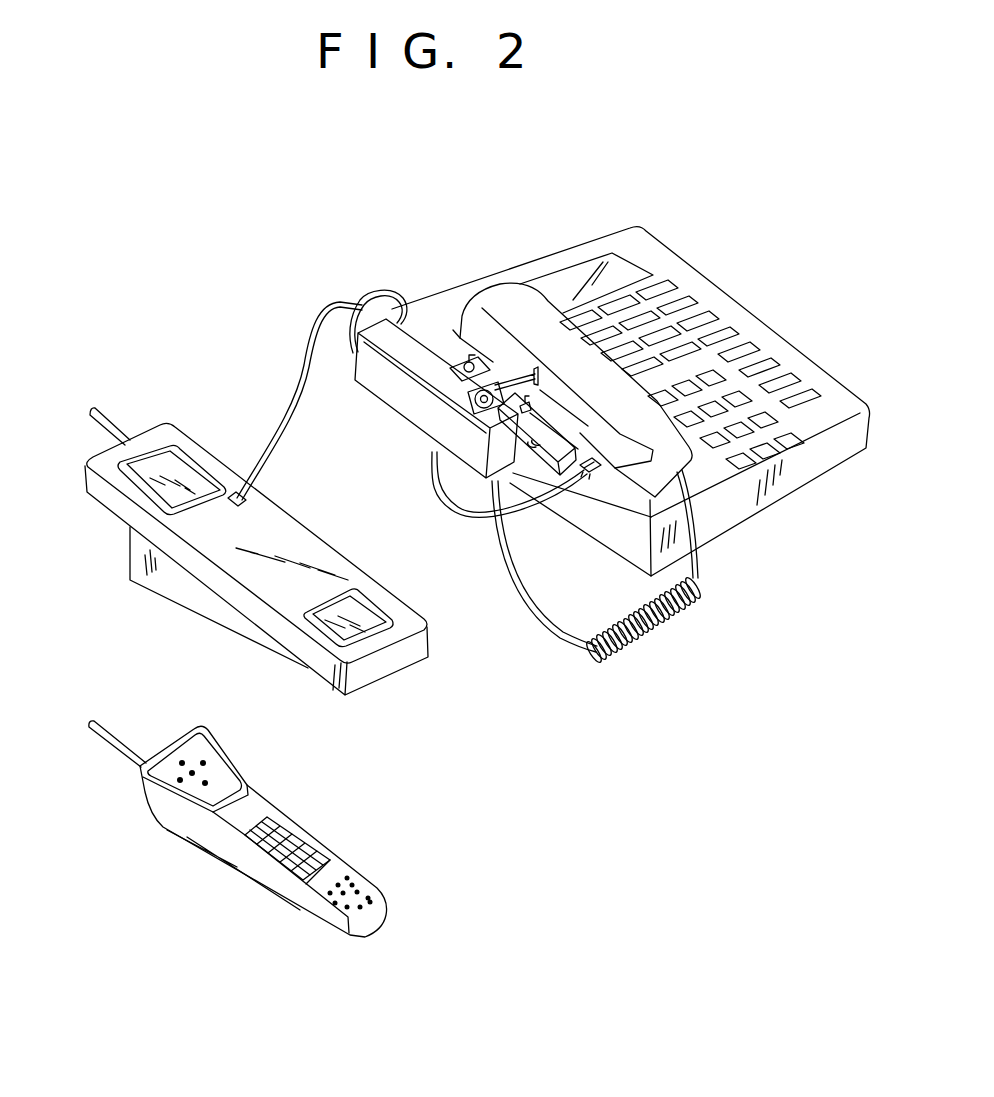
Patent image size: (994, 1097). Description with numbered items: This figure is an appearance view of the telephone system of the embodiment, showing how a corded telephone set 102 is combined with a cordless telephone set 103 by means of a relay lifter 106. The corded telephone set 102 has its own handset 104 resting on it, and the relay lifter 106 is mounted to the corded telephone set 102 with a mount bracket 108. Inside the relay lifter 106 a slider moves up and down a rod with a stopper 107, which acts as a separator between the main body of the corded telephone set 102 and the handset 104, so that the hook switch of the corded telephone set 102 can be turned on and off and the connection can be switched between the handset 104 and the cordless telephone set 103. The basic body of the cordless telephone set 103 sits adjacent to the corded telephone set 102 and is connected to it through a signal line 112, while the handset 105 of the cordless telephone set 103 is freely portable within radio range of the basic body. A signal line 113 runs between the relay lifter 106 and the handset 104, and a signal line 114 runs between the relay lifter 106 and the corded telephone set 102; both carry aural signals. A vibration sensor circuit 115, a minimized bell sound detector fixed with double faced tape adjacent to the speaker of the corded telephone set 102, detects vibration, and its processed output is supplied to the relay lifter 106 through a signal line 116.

The corded telephone set 102 is at (673, 268).
The cordless telephone set 103 is at (246, 605).
The handset 104 is at (512, 298).
The handset 105 is at (288, 827).
The relay lifter 106 is at (412, 410).
The rod with a stopper 107 is at (522, 357).
The mount bracket 108 is at (548, 462).
The signal line 112 is at (281, 430).
The signal line 113 is at (655, 625).
The signal line 114 is at (381, 285).
The vibration sensor circuit 115 is at (601, 476).
The signal line 116 is at (462, 515).